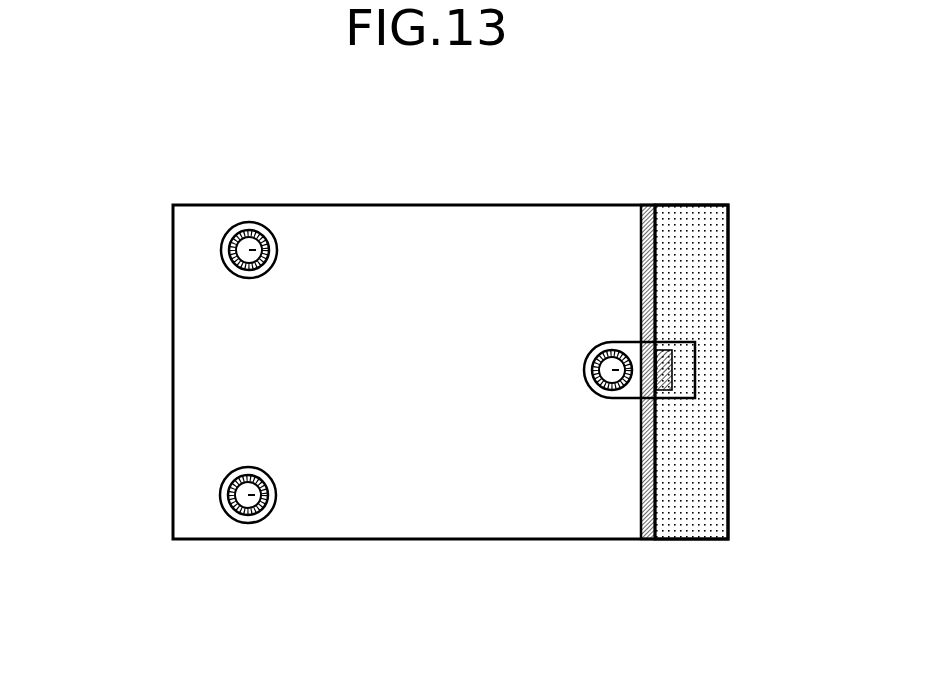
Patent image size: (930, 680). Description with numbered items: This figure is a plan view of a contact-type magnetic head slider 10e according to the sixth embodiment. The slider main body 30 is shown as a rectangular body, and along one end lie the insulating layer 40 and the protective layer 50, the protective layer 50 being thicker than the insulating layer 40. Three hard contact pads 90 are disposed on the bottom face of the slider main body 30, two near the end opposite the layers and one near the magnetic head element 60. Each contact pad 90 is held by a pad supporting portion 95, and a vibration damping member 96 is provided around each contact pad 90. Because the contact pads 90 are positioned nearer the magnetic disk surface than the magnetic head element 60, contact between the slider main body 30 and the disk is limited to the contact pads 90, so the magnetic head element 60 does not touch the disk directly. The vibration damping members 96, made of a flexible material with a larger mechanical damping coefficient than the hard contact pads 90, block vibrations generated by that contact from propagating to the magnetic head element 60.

The magnetic head slider 10e is at (533, 152).
The slider main body 30 is at (467, 528).
The insulating layer 40 is at (646, 204).
The protective layer 50 is at (716, 262).
The magnetic head element 60 is at (700, 365).
The contact pad 90 is at (238, 256).
The pad supporting portion 95 is at (222, 242).
The vibration damping member 96 is at (252, 228).